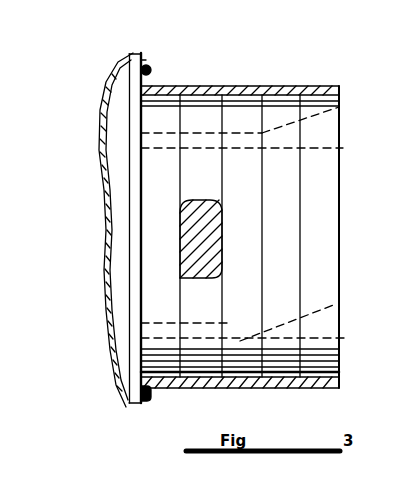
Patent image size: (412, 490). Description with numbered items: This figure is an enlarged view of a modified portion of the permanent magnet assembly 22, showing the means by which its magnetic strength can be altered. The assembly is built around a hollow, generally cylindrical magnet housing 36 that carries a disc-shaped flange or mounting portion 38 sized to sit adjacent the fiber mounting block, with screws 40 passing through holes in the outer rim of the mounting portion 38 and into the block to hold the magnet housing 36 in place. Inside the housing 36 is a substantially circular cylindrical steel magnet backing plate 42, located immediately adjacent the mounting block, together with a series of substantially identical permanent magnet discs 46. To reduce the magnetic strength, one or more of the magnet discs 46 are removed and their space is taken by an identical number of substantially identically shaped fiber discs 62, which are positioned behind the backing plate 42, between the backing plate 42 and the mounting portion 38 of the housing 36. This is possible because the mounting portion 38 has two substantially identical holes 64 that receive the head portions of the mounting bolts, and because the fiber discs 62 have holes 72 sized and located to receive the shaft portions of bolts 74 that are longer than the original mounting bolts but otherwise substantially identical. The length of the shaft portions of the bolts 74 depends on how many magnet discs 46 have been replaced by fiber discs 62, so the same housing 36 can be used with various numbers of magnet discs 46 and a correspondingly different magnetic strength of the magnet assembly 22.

The permanent magnet assembly 22 is at (284, 384).
The magnet housing 36 is at (196, 86).
The disc-shaped flange or mounting portion 38 is at (143, 55).
The screws 40 is at (150, 68).
The steel magnet backing plate 42 is at (243, 110).
The permanent magnet discs 46 is at (278, 112).
The fiber discs 62 is at (160, 353).
The holes 64 is at (128, 134).
The holes 72 is at (254, 245).
The bolts 74 is at (339, 107).